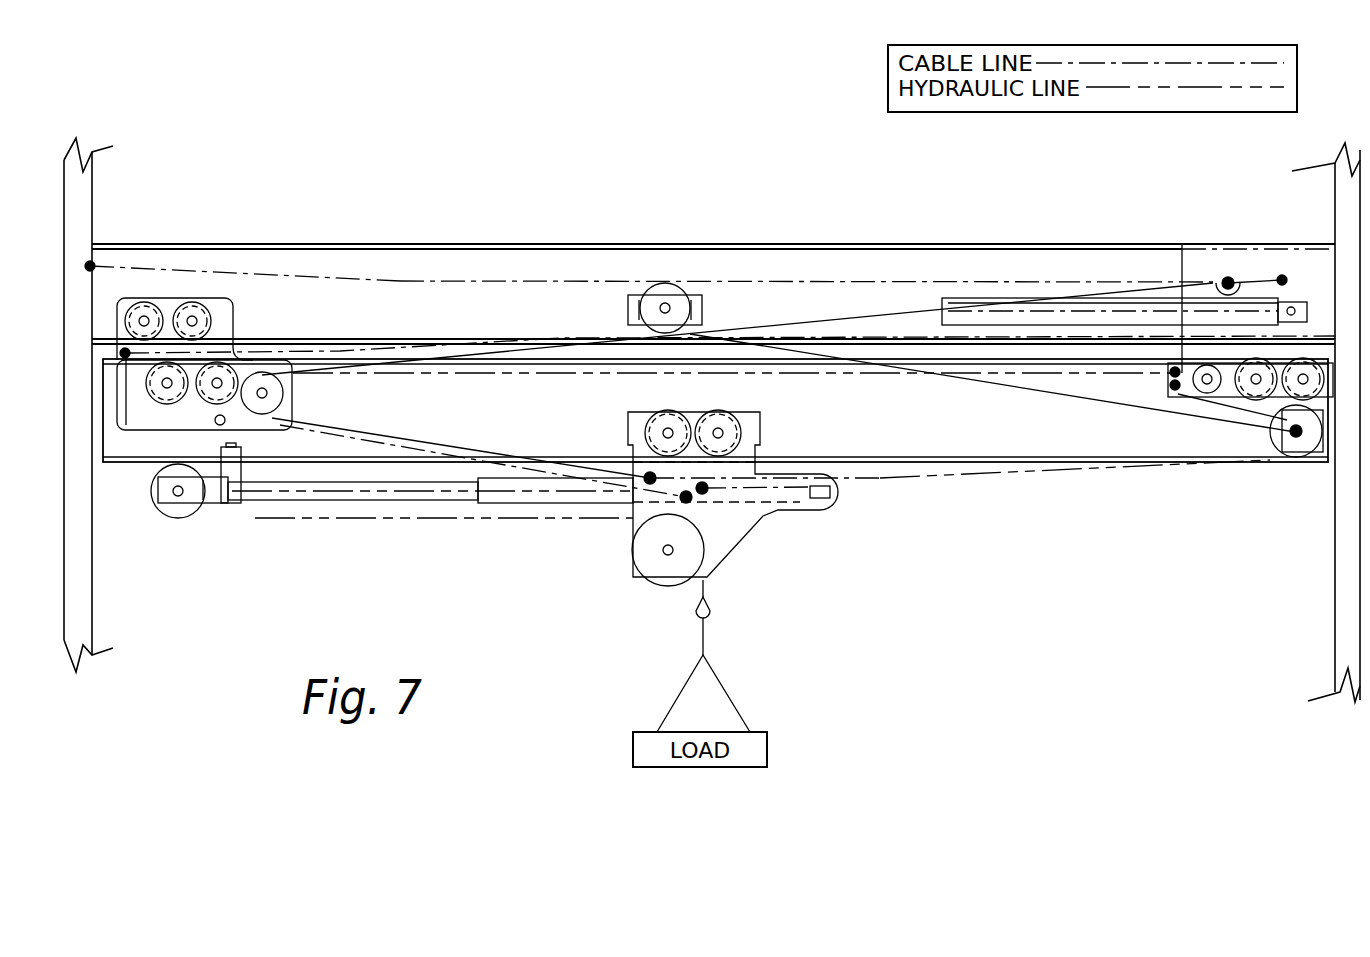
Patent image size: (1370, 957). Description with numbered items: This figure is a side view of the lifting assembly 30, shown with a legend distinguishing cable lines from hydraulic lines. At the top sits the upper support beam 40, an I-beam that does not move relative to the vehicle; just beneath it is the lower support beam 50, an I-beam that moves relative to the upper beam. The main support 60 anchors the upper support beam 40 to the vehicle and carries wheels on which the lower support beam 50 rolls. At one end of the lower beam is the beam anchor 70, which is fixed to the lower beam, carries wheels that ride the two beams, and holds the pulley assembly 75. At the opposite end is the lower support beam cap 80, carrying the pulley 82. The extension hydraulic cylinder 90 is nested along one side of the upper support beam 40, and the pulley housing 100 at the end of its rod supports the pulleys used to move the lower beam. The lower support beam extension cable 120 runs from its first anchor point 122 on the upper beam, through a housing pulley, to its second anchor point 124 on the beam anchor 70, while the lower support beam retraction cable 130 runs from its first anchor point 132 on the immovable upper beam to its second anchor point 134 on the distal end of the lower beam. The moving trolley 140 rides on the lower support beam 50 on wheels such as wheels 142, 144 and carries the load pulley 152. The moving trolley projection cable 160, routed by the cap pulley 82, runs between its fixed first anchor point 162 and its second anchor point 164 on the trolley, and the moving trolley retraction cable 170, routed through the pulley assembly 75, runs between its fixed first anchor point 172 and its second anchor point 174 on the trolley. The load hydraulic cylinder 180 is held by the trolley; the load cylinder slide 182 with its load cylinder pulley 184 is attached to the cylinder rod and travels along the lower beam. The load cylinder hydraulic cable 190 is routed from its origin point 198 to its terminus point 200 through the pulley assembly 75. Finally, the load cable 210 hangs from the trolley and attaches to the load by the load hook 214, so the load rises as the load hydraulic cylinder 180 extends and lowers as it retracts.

The lifting assembly 30 is at (586, 236).
The upper support beam 40 is at (313, 260).
The lower support beam 50 is at (860, 432).
The main support 60 is at (1242, 264).
The beam anchor 70 is at (223, 313).
The pulley assembly 75 is at (253, 380).
The lower support beam cap 80 is at (1323, 442).
The lower support beam cap pulley 82 is at (1273, 440).
The extension hydraulic cylinder 90 is at (963, 307).
The extension hydraulic cylinder pulley housing 100 is at (696, 305).
The lower support beam extension cable 120 is at (390, 278).
The lower support beam extension cable first anchor point 122 is at (90, 267).
The lower support beam extension cable second anchor point 124 is at (127, 358).
The lower support beam retraction cable 130 is at (815, 281).
The lower support beam retraction cable first anchor point 132 is at (1227, 275).
The lower support beam retraction cable second anchor point 134 is at (1296, 437).
The moving trolley 140 is at (730, 532).
The wheel 142 is at (668, 410).
The wheel 144 is at (718, 410).
The load pulley 152 is at (702, 488).
The moving trolley projection cable 160 is at (960, 478).
The moving trolley projection cable first anchor point 162 is at (1175, 390).
The moving trolley projection cable second anchor point 164 is at (702, 488).
The moving trolley retraction cable 170 is at (337, 432).
The moving trolley retraction cable first anchor point 172 is at (1173, 378).
The moving trolley retraction cable second anchor point 174 is at (686, 497).
The load hydraulic cylinder 180 is at (492, 486).
The load cylinder slide 182 is at (230, 458).
The load cylinder pulley 184 is at (168, 518).
The load cylinder hydraulic cable 190 is at (375, 435).
The origin point 198 is at (1282, 274).
The terminus point 200 is at (650, 478).
The load cable 210 is at (715, 600).
The load hook 214 is at (714, 621).